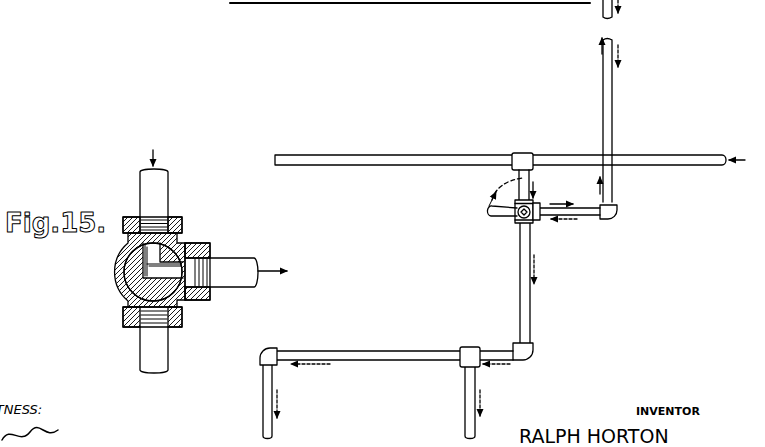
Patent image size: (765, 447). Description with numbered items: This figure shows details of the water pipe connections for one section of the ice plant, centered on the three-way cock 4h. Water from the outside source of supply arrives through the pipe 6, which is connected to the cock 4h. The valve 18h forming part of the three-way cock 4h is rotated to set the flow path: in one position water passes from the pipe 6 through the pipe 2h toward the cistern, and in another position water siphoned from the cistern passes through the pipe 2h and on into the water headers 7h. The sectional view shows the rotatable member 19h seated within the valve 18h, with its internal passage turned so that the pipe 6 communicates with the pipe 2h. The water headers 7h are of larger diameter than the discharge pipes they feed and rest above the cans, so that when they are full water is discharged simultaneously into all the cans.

The water supply pipe 6 is at (163, 192).
The pipe 2h is at (236, 267).
The valve 18h is at (128, 283).
The valve plug 19h is at (178, 277).
The water header 7h is at (272, 428).
The three-way cock 4h is at (493, 217).